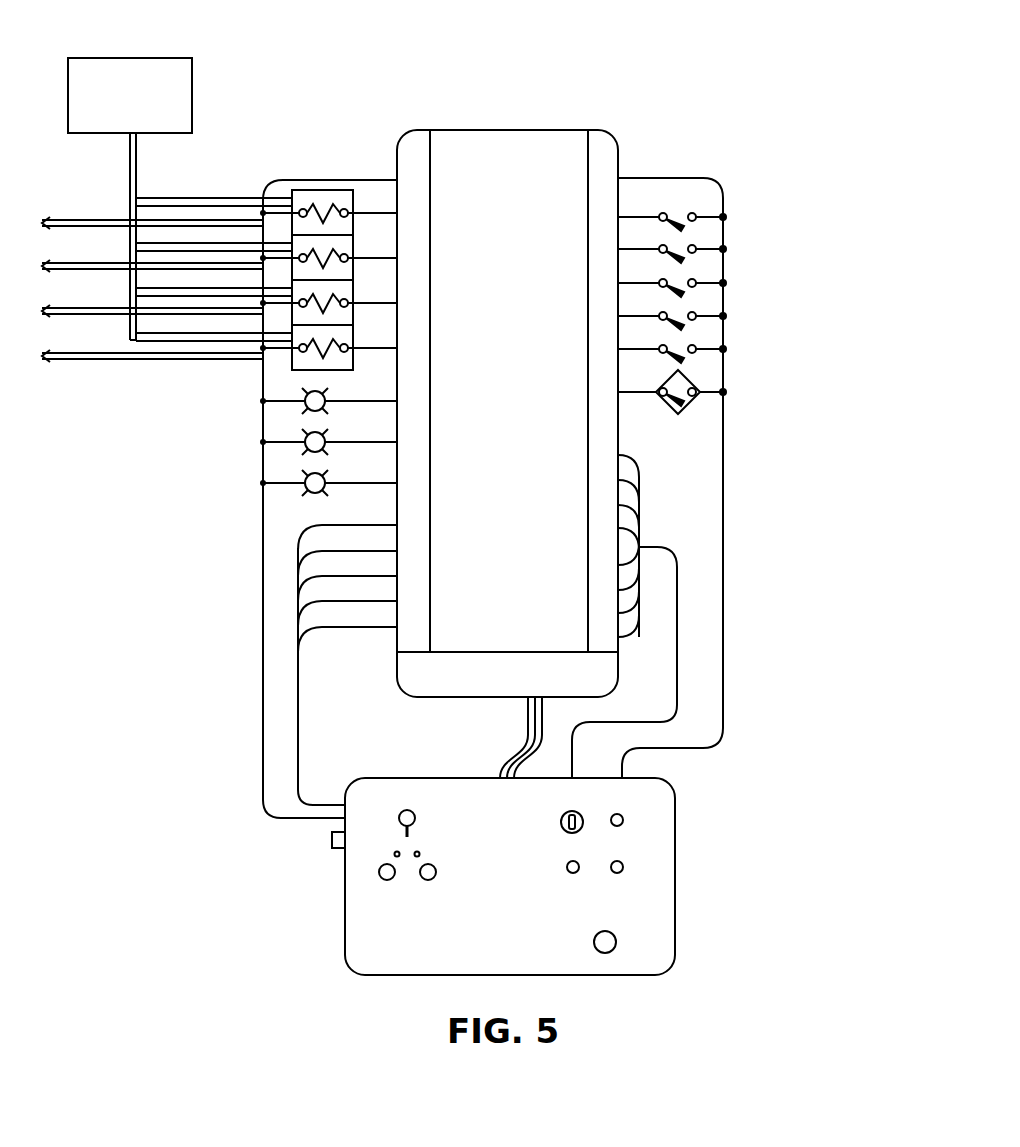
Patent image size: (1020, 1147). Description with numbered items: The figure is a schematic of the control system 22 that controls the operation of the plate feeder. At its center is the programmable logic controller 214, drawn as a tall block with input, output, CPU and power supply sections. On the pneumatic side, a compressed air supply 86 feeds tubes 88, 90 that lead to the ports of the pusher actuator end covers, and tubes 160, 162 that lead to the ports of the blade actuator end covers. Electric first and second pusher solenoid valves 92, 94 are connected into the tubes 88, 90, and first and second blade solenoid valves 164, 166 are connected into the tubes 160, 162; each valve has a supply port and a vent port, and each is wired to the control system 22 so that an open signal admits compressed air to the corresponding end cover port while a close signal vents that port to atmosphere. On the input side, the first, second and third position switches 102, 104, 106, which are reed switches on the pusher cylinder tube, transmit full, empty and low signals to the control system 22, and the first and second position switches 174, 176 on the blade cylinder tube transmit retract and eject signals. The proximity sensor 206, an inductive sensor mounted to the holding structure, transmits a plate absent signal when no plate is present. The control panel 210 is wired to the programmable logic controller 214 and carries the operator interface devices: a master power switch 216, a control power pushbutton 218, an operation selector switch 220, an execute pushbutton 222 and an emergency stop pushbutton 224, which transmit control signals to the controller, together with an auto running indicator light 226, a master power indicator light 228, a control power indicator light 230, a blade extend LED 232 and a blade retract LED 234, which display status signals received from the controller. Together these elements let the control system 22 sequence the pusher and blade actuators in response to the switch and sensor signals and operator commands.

The control system 22 is at (658, 93).
The compressed air supply 86 is at (155, 58).
The tube 88 is at (103, 218).
The tube 90 is at (105, 262).
The first pusher solenoid valve 92 is at (300, 190).
The second pusher solenoid valve 94 is at (350, 240).
The first position switch 102 is at (684, 202).
The second position switch 104 is at (684, 236).
The third position switch 106 is at (684, 270).
The tube 160 is at (115, 308).
The tube 162 is at (120, 352).
The first blade solenoid valve 164 is at (357, 285).
The second blade solenoid valve 166 is at (352, 358).
The first position switch 174 is at (684, 303).
The second position switch 176 is at (684, 336).
The proximity sensor 206 is at (695, 408).
The control panel 210 is at (678, 863).
The programmable logic controller 214 is at (509, 128).
The master power switch 216 is at (581, 815).
The control power pushbutton 218 is at (574, 875).
The operation selector switch 220 is at (400, 812).
The execute pushbutton 222 is at (388, 880).
The emergency stop pushbutton 224 is at (617, 942).
The auto running indicator light 226 is at (428, 880).
The master power indicator light 228 is at (624, 821).
The control power indicator light 230 is at (622, 872).
The blade extend LED 232 is at (420, 854).
The blade retract LED 234 is at (394, 856).